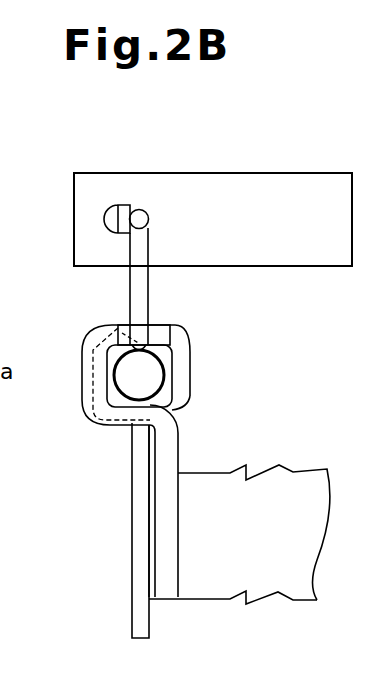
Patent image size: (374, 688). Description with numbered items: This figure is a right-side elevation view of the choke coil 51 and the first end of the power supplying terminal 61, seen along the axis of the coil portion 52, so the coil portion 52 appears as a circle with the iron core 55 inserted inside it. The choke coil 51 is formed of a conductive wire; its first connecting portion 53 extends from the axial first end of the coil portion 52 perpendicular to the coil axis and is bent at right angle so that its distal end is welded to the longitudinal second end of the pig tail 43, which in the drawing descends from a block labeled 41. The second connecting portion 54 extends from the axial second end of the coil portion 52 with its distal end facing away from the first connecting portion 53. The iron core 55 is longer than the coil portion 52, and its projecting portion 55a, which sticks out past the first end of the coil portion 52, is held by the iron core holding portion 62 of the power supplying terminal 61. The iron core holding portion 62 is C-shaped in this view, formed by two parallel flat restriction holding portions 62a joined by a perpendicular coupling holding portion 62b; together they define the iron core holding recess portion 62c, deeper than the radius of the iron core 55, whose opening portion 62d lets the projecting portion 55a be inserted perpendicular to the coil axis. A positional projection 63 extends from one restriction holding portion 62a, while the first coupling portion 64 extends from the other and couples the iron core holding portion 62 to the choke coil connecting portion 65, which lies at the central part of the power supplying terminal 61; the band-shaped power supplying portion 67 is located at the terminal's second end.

The base member 41 is at (313, 267).
The pig tail 43 is at (122, 205).
The first connecting portion 53 is at (148, 240).
The positional projection 63 is at (172, 330).
The iron core holding portion 62 is at (88, 348).
The restriction holding portion 62a is at (116, 327).
The coupling holding portion 62b is at (83, 373).
The iron core holding recess portion 62c is at (150, 338).
The opening portion 62d is at (172, 412).
The choke coil 51 is at (188, 352).
The coil portion 52 is at (176, 377).
The iron core 55 is at (175, 402).
The projecting portion 55a is at (106, 414).
The power supplying terminal 61 is at (307, 470).
The first coupling portion 64 is at (168, 522).
The choke coil connecting portion 65 is at (148, 566).
The second connecting portion 54 is at (138, 622).
The power supplying portion 67 is at (258, 588).